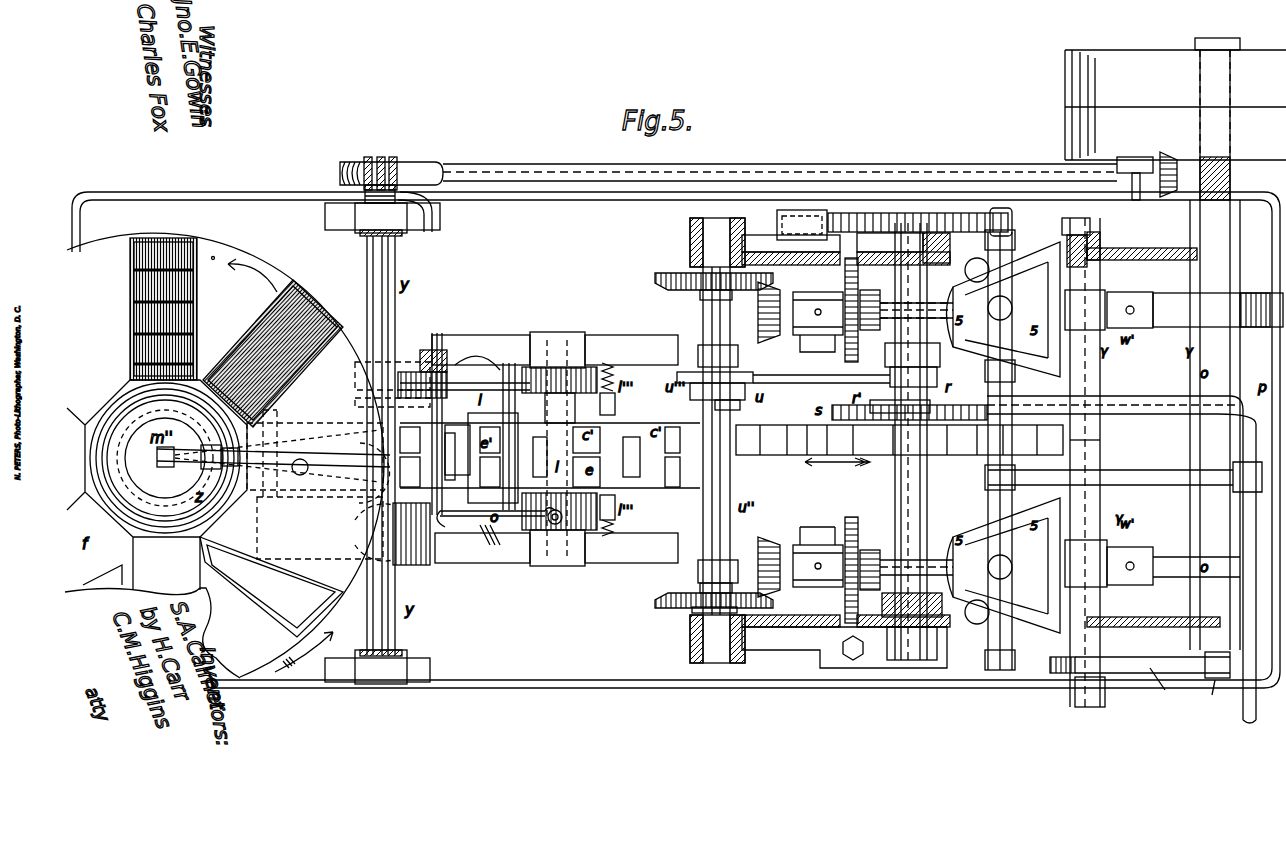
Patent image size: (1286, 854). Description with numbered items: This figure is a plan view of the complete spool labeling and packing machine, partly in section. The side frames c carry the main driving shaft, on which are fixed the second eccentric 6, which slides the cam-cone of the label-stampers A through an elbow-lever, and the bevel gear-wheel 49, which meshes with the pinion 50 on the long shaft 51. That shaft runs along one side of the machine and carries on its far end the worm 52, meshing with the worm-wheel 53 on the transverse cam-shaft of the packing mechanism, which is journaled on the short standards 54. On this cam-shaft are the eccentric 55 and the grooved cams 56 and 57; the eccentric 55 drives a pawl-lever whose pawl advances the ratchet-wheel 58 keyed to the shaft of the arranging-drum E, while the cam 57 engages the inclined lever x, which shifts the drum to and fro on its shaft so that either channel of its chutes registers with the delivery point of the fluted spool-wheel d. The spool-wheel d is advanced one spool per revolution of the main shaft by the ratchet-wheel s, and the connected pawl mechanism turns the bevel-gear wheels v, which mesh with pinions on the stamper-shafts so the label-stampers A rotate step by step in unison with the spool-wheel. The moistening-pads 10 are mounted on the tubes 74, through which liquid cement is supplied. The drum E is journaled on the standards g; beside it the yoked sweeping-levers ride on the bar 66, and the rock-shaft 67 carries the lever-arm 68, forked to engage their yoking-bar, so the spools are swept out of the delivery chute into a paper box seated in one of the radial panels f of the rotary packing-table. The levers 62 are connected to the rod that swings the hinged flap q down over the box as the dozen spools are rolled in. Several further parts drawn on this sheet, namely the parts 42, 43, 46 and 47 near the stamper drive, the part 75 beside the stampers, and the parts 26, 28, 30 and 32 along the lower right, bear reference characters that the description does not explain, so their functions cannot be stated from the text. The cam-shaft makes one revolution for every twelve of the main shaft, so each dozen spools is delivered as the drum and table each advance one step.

The long shaft 51 is at (780, 164).
The worm 52 is at (396, 150).
The worm-wheel 53 is at (379, 197).
The standards 54 is at (382, 219).
The eccentric 55 is at (464, 371).
The cylindrical grooved cam 56 is at (398, 424).
The cylindrical grooved cam 57 is at (392, 543).
The ratchet-wheel 58 is at (559, 437).
The levers 62 is at (273, 466).
The bar 66 is at (477, 354).
The rock-shaft 67 is at (479, 450).
The lever-arm 68 is at (457, 450).
The box 43 is at (802, 217).
The gear 42 is at (920, 215).
The pinion 46 is at (875, 552).
The gear wheel 47 is at (852, 440).
The pinion 50 is at (1180, 174).
The bevel gear-wheel 49 is at (1185, 178).
The tubes 74 is at (1124, 550).
The column 75 is at (1095, 462).
The shaft 26 is at (1100, 447).
The rod 28 is at (1129, 679).
The rod 30 is at (1165, 684).
The collar 32 is at (1217, 695).
The moistening-pads 10 is at (991, 450).
The eccentric 6 is at (1195, 350).
The label-stampers A is at (1004, 437).
The spool-wheel d is at (899, 445).
The bevel-gear wheels v is at (714, 440).
The side frames c is at (981, 448).
The ratchet-wheel s is at (901, 413).
The standards g is at (555, 442).
The arranging-drum E is at (613, 449).
The hinged flap q is at (315, 456).
The radial panels f is at (139, 313).
The inclined lever x is at (499, 520).